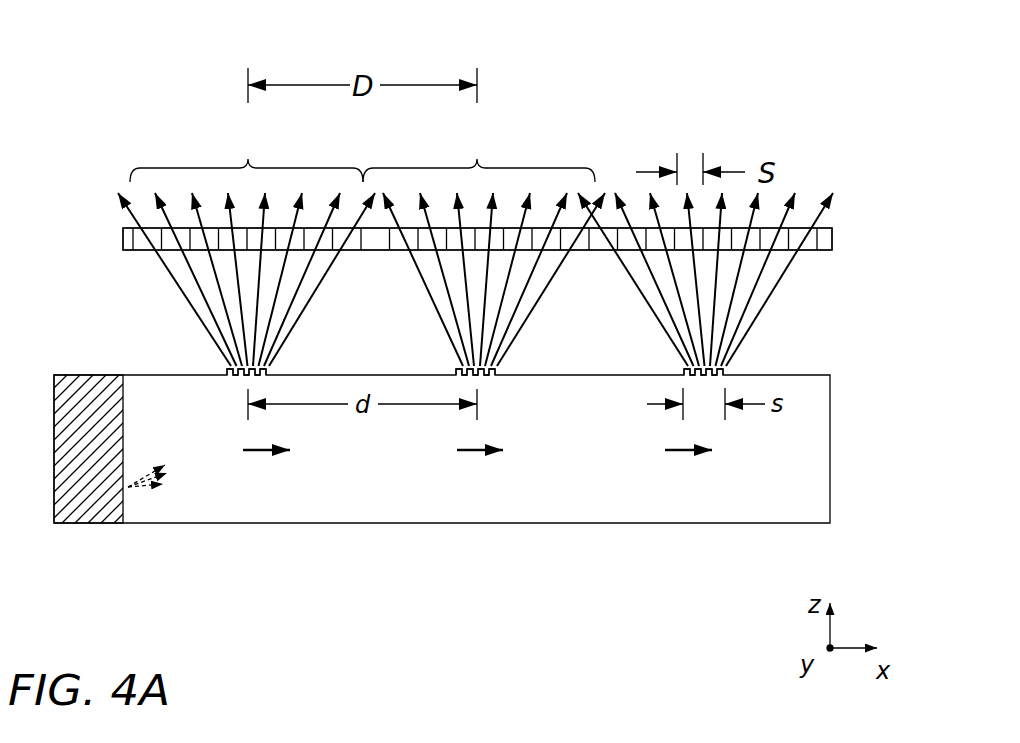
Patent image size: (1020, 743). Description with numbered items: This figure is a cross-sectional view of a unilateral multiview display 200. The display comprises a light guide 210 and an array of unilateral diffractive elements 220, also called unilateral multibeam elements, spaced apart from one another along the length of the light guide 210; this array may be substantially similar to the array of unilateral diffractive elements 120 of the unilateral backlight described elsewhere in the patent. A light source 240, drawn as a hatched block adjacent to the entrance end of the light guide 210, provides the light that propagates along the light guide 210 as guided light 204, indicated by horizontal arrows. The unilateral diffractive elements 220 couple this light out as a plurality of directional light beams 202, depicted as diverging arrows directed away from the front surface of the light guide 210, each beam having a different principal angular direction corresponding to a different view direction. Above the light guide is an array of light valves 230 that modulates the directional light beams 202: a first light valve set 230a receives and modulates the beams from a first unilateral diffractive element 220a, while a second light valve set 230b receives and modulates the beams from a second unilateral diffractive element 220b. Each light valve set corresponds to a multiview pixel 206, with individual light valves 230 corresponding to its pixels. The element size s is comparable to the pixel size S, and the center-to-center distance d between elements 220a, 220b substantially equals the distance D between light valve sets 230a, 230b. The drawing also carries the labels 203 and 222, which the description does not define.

The unilateral multiview display 200 is at (787, 70).
The directional light beams 202 is at (832, 272).
The guided light 203 is at (480, 472).
The guided light 204 is at (160, 497).
The multiview pixel 206 is at (190, 135).
The array of unilateral diffractive elements 120 is at (500, 388).
The light guide 210 is at (840, 354).
The unilateral diffractive elements 220 is at (212, 352).
The diffraction grating 222 is at (745, 353).
The first unilateral diffractive element 220a is at (285, 353).
The second unilateral diffractive element 220b is at (515, 353).
The light valves 230 is at (110, 237).
The first light valve set 230a is at (246, 153).
The second light valve set 230b is at (479, 153).
The light source 240 is at (88, 537).